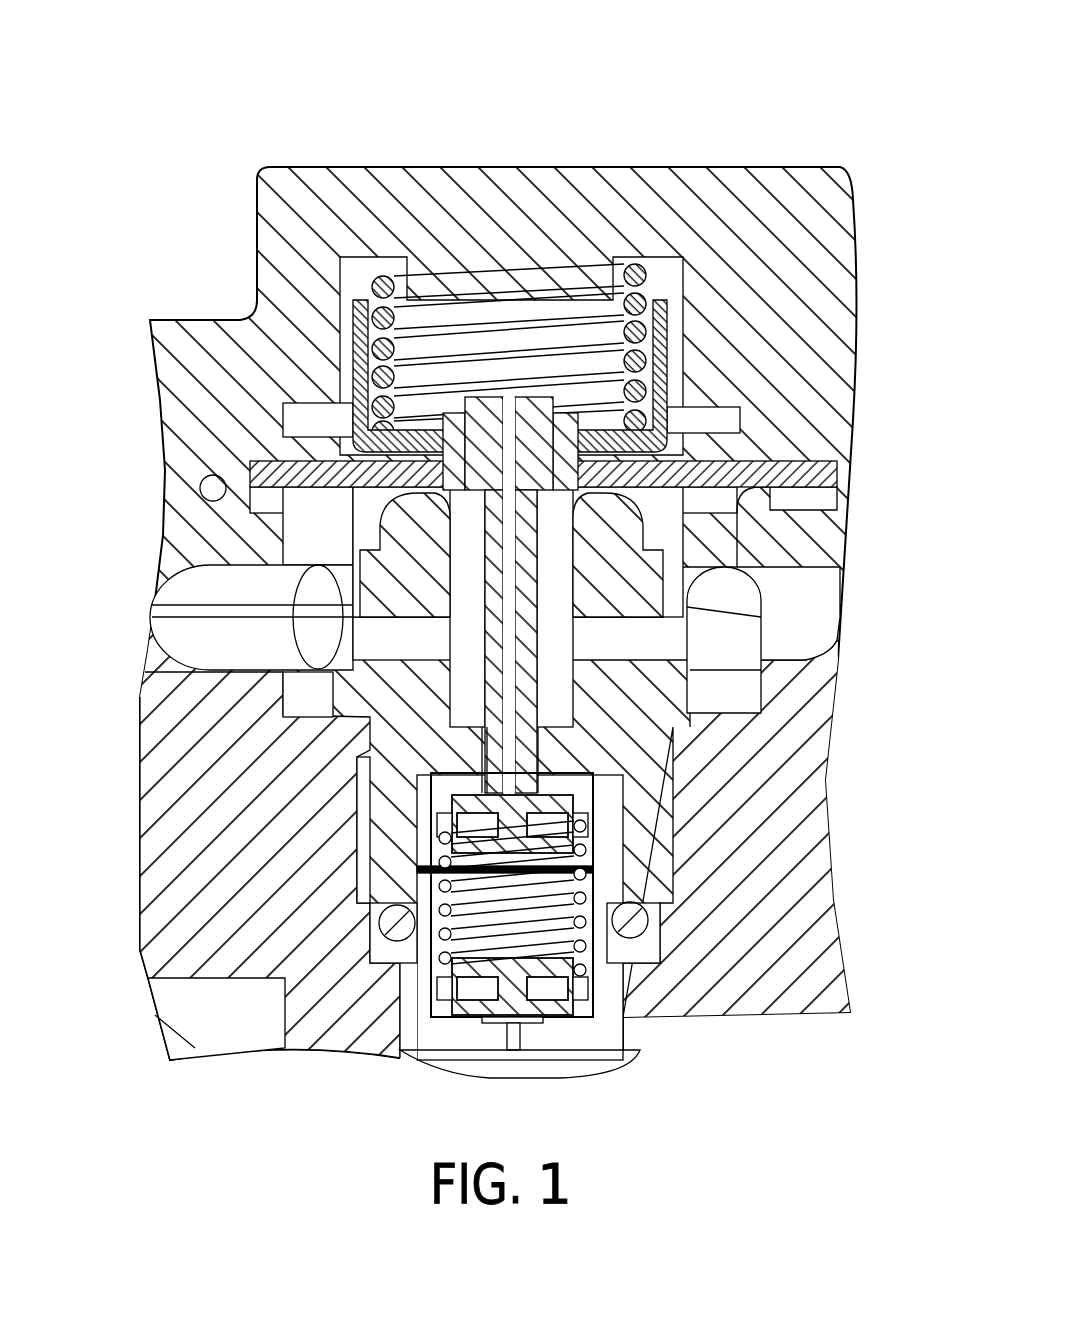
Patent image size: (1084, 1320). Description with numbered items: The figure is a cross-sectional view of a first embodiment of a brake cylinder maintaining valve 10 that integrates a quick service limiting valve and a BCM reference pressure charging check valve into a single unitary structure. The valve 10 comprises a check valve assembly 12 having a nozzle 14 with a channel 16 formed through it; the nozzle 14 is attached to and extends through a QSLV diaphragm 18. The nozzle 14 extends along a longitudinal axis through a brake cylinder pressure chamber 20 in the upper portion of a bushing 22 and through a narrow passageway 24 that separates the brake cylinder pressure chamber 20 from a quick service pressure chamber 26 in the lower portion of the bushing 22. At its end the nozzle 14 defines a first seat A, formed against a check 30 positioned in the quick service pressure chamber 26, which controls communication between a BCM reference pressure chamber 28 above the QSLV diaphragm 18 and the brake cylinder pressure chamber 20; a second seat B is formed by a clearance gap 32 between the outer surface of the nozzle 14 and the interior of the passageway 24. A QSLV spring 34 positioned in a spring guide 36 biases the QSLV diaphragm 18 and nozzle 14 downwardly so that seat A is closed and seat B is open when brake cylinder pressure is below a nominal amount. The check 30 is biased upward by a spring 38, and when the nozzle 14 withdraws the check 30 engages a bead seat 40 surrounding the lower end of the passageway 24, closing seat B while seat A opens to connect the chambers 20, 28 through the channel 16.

The brake cylinder maintaining valve 10 is at (478, 72).
The check valve assembly 12 is at (552, 683).
The nozzle 14 is at (537, 703).
The channel 16 is at (527, 730).
The QSLV diaphragm 18 is at (188, 478).
The brake cylinder pressure chamber 20 is at (212, 642).
The bushing 22 is at (334, 688).
The narrow passageway 24 is at (468, 755).
The quick service pressure chamber 26 is at (607, 1032).
The BCM reference pressure chamber 28 is at (352, 272).
The check 30 is at (598, 840).
The clearance gap 32 is at (470, 707).
The QSLV spring 34 is at (648, 295).
The spring guide 36 is at (672, 320).
The spring 38 is at (430, 937).
The bead seat 40 is at (513, 895).
The first seat A is at (470, 783).
The second seat B is at (555, 787).